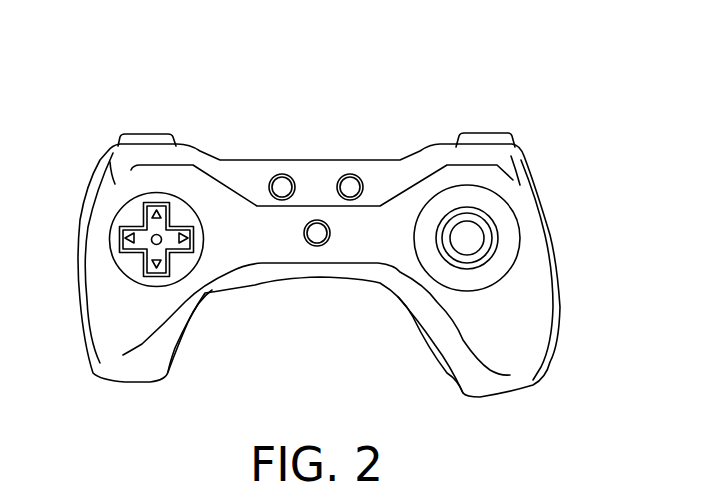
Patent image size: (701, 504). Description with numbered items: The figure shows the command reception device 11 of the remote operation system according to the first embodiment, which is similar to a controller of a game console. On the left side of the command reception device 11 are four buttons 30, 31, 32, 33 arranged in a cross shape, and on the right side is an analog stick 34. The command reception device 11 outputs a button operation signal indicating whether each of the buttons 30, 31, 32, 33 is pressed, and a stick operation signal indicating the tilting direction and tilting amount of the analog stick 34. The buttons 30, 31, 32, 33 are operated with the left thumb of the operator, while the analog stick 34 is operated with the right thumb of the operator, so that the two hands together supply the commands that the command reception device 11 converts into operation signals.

The command reception device 11 is at (91, 60).
The button 30 is at (158, 202).
The button 31 is at (166, 276).
The button 32 is at (195, 243).
The button 33 is at (118, 241).
The analog stick 34 is at (487, 238).